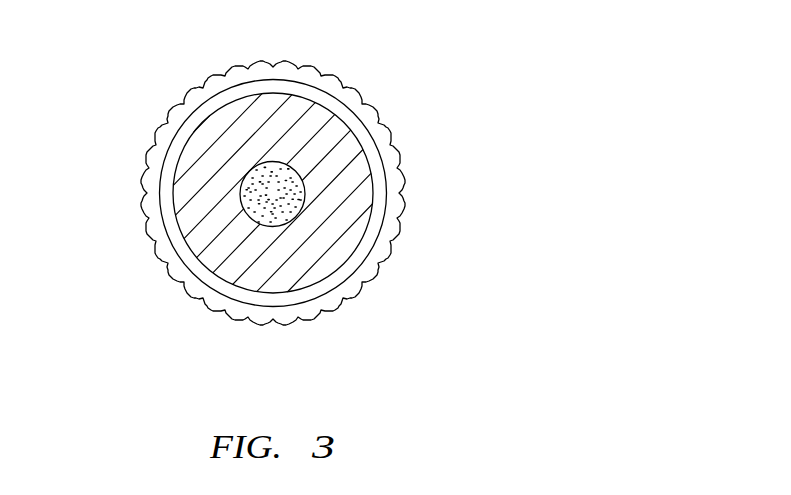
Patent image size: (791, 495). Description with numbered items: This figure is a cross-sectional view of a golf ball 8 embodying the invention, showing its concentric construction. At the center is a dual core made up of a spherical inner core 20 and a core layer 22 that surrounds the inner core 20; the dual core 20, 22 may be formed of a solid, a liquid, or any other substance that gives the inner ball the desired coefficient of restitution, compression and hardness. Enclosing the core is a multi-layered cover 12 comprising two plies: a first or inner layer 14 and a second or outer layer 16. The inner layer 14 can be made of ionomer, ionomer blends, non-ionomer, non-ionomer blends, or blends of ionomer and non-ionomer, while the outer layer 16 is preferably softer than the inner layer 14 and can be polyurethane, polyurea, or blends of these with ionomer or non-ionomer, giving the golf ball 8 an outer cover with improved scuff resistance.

The golf ball 8 is at (392, 73).
The cover 12 is at (165, 186).
The inner layer 14 is at (357, 258).
The outer layer 16 is at (348, 290).
The inner core 20 is at (303, 197).
The core layer 22 is at (343, 218).